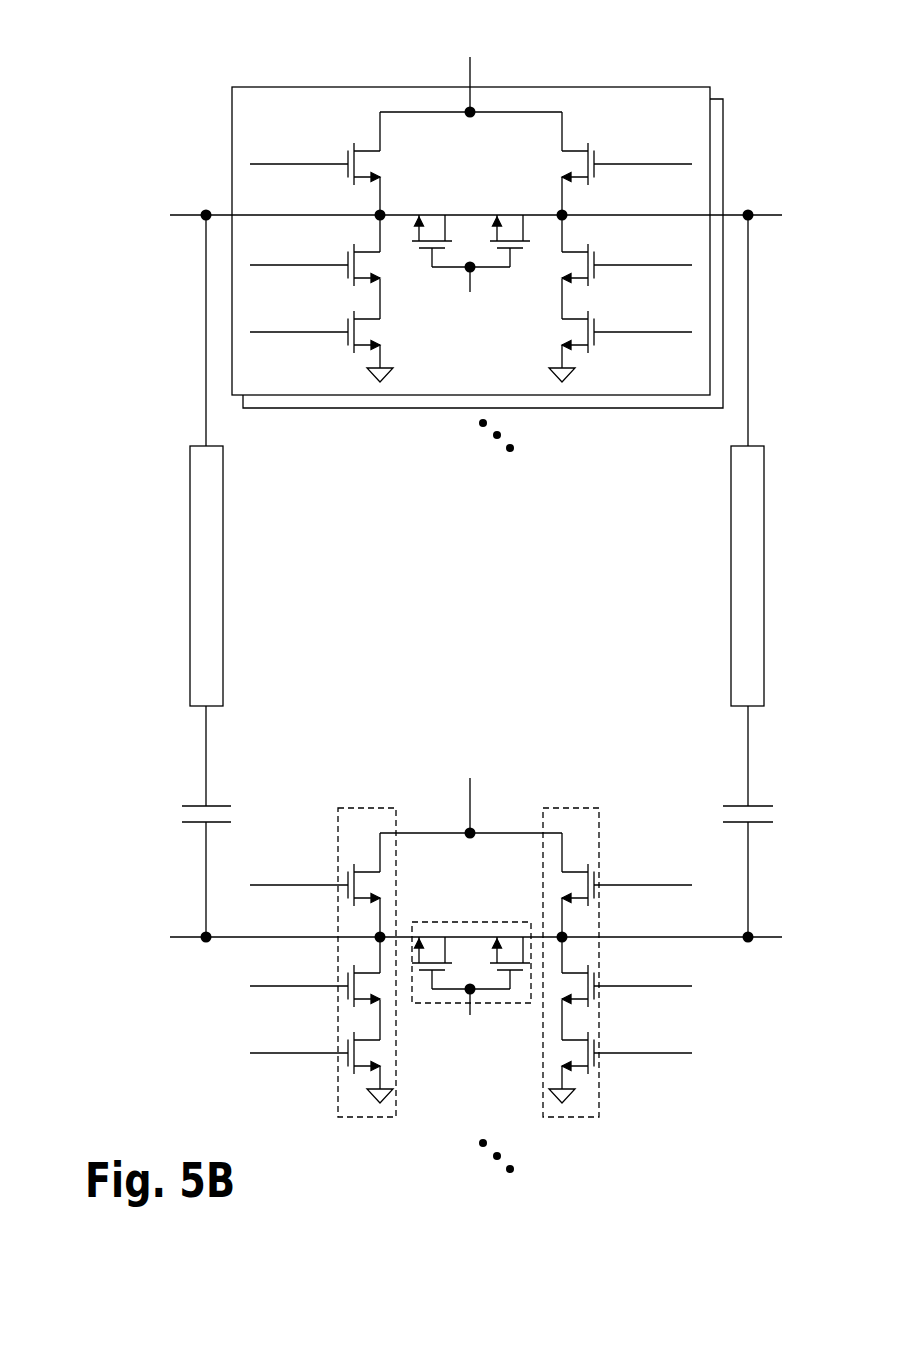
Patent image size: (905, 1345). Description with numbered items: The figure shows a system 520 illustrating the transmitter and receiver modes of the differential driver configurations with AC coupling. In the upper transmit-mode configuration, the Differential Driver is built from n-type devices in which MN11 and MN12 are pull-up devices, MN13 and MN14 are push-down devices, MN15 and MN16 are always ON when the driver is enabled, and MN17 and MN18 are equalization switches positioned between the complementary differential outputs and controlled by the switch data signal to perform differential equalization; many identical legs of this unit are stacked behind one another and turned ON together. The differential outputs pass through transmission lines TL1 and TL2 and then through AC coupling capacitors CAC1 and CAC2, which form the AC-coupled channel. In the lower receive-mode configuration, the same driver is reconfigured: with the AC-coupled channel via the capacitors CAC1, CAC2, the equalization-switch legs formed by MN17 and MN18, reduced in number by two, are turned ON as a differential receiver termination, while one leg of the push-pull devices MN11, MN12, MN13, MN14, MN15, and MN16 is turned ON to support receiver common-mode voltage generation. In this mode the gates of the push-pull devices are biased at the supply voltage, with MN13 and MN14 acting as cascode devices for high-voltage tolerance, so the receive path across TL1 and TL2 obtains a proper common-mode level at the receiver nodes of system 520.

The system 520 is at (103, 55).
The transmission line TL1 is at (206, 576).
The transmission line TL2 is at (747, 576).
The AC coupling capacitor CAC1 is at (179, 818).
The AC coupling capacitor CAC2 is at (772, 818).
The n-type pull-up device MN11 is at (614, 524).
The n-type pull-up device MN12 is at (329, 524).
The n-type push-down device MN13 is at (614, 625).
The n-type push-down device MN14 is at (329, 625).
The n-type device MN15 is at (614, 692).
The n-type device MN16 is at (329, 692).
The equalization switch MN17 is at (510, 589).
The equalization switch MN18 is at (436, 589).